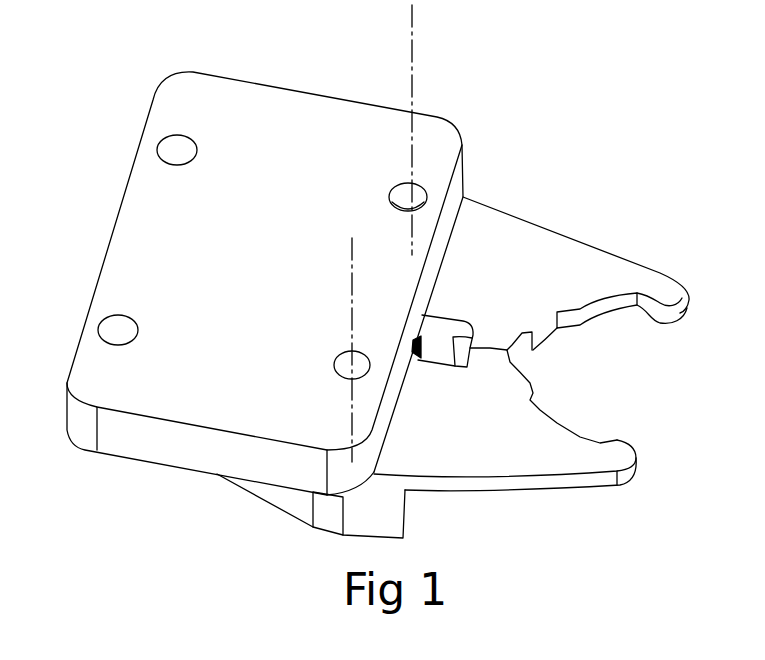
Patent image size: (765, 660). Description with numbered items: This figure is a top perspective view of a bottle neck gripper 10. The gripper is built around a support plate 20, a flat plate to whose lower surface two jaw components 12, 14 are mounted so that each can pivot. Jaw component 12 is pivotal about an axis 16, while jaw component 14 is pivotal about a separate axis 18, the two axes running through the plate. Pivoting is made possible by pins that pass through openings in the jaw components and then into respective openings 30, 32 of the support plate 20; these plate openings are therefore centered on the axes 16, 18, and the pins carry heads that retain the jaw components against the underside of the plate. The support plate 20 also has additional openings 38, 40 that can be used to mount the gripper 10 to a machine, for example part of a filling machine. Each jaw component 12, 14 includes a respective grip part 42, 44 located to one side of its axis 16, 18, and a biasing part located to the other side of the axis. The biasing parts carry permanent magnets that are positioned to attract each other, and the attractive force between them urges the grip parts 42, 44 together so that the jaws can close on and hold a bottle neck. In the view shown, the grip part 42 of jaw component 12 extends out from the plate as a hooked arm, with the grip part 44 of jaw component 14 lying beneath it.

The bottle neck gripper 10 is at (359, 279).
The jaw component 12 is at (531, 355).
The jaw component 14 is at (418, 515).
The axis 16 is at (417, 40).
The axis 18 is at (348, 278).
The support plate 20 is at (120, 440).
The opening 30 is at (423, 190).
The opening 32 is at (334, 372).
The opening 38 is at (195, 143).
The opening 40 is at (103, 322).
The grip part 42 is at (607, 255).
The grip part 44 is at (543, 457).